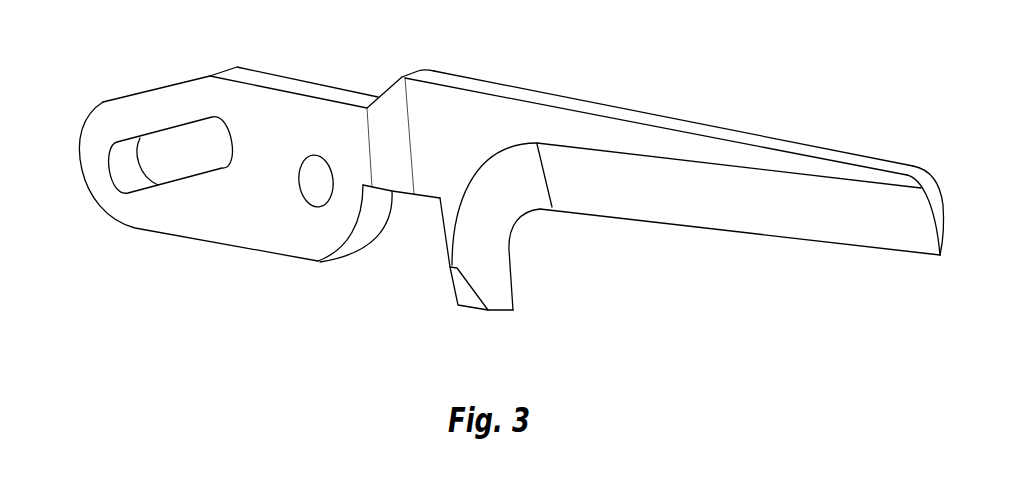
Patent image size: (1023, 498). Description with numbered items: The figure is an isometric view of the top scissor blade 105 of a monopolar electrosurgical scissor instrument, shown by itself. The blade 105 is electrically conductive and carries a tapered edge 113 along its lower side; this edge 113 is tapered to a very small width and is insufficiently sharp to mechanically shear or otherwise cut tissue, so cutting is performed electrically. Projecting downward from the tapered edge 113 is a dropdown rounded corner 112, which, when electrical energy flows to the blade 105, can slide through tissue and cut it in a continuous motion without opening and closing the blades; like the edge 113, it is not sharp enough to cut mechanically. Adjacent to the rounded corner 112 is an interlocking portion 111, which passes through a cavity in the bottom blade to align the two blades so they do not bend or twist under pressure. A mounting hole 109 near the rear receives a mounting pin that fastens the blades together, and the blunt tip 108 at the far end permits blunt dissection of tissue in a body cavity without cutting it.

The top scissor blade 105 is at (458, 77).
The blunt tip 108 is at (930, 187).
The mounting hole 109 is at (317, 183).
The interlocking portion 111 is at (470, 298).
The dropdown rounded corner 112 is at (515, 238).
The tapered edge 113 is at (763, 235).